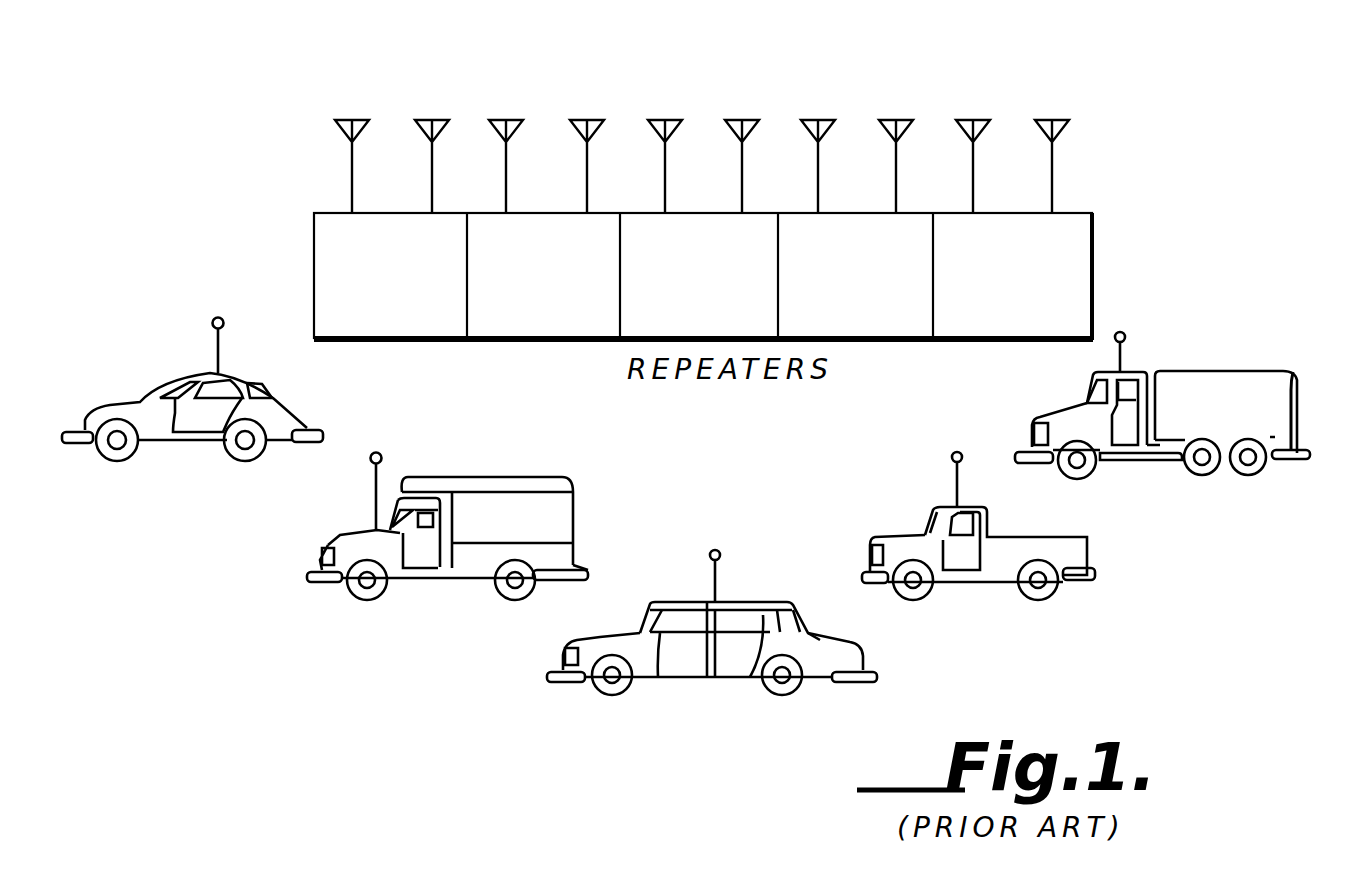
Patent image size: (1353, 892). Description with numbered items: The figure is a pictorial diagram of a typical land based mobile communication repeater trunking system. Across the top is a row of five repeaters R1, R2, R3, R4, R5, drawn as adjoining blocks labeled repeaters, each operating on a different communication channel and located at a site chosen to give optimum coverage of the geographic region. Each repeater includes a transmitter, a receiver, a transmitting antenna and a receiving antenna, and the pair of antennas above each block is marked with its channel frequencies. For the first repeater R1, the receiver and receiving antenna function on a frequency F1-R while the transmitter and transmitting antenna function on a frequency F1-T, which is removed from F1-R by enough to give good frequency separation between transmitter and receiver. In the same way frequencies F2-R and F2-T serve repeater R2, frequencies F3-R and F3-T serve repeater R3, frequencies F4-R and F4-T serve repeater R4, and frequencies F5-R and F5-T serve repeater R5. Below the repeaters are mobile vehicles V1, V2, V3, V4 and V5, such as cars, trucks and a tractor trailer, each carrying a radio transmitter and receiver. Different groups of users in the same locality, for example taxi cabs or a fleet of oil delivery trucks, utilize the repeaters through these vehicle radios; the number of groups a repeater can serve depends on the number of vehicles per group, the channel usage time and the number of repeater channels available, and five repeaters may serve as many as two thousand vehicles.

The first repeater R1 is at (390, 276).
The second repeater R2 is at (543, 276).
The third repeater R3 is at (699, 276).
The fourth repeater R4 is at (855, 276).
The fifth repeater R5 is at (1012, 276).
The receiving frequency of first repeater F1-R is at (347, 141).
The transmitting frequency of first repeater F1-T is at (449, 141).
The receiving frequency of second repeater F2-R is at (524, 141).
The transmitting frequency of second repeater F2-T is at (602, 141).
The receiving frequency of third repeater F3-R is at (680, 141).
The transmitting frequency of third repeater F3-T is at (756, 141).
The receiving frequency of fourth repeater F4-R is at (836, 141).
The transmitting frequency of fourth repeater F4-T is at (919, 141).
The receiving frequency of fifth repeater F5-R is at (995, 141).
The transmitting frequency of fifth repeater F5-T is at (1081, 141).
The mobile vehicle V1 is at (192, 419).
The mobile vehicle V2 is at (447, 549).
The mobile vehicle V3 is at (712, 647).
The mobile vehicle V4 is at (978, 549).
The mobile vehicle V5 is at (1162, 430).